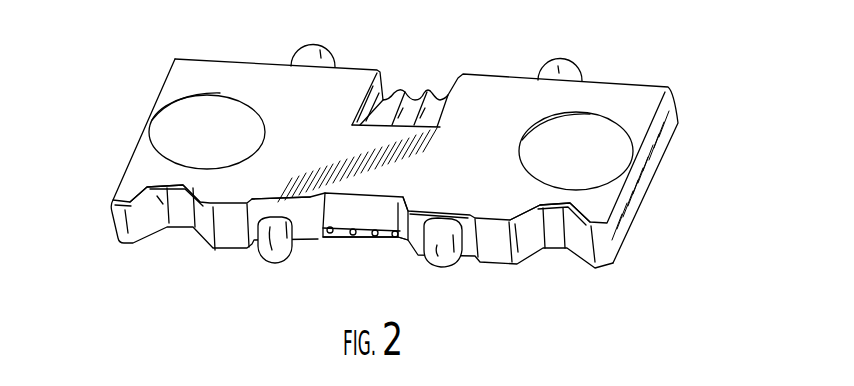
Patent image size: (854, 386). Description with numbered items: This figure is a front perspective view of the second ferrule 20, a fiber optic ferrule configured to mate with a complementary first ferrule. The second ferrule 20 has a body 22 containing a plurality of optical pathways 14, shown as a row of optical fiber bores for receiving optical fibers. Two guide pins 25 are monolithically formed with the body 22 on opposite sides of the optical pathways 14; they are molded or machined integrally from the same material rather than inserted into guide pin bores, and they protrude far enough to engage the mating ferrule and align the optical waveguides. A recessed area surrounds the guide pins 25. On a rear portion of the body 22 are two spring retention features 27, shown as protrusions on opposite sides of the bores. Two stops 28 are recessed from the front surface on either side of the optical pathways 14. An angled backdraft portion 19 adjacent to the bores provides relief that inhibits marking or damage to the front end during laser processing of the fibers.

The second ferrule 20 is at (224, 83).
The body 22 is at (632, 95).
The spring retention feature 27 is at (320, 57).
The stop 28 is at (160, 200).
The backdraft portion 19 is at (345, 213).
The optical pathways 14 is at (395, 238).
The guide pin 25 is at (262, 262).